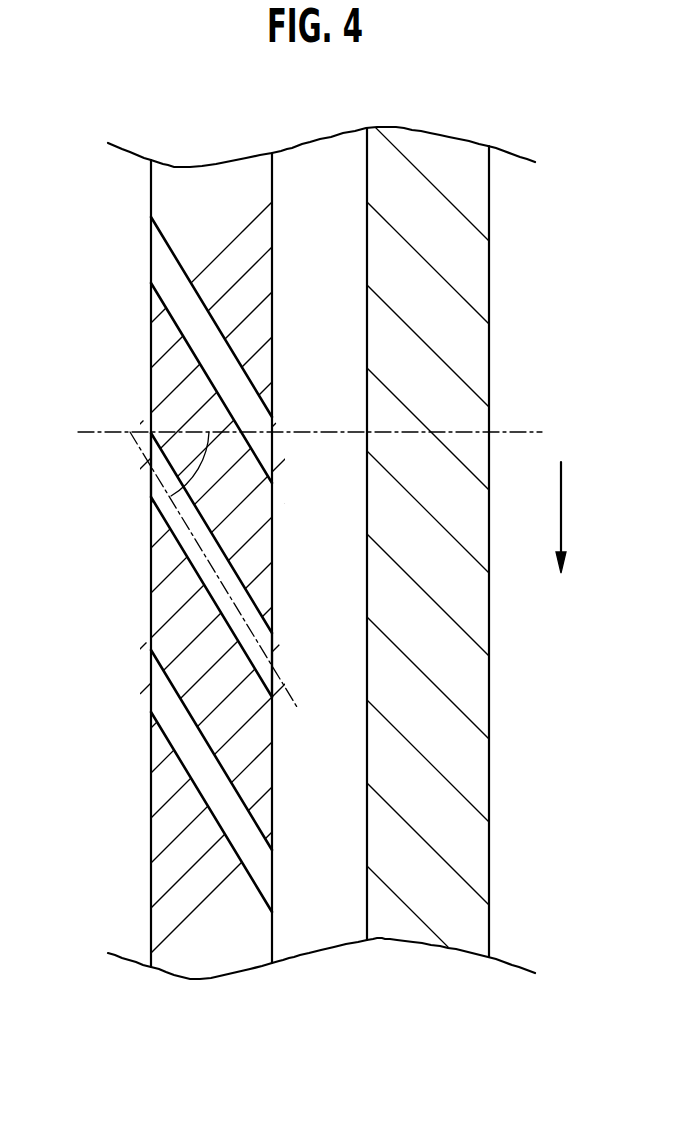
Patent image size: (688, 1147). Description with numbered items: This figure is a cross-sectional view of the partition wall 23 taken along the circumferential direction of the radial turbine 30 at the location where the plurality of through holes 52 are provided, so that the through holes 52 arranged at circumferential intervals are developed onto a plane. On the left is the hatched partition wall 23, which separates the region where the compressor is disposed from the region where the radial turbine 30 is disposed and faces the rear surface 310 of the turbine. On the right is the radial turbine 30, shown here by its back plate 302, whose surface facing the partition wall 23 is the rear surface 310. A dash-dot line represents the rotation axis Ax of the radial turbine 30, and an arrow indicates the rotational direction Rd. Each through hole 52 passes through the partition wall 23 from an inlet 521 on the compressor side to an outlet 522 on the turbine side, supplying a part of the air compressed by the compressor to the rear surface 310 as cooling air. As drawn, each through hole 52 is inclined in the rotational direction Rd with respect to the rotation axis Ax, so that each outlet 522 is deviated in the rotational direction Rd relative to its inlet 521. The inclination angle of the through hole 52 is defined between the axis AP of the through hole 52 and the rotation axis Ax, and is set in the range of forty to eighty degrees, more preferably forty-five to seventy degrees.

The partition wall 23 is at (205, 217).
The radial turbine 30 is at (440, 594).
The back plate 302 is at (458, 348).
The rear surface 310 is at (363, 258).
The through hole 52 is at (180, 313).
The inlet 521 is at (150, 477).
The outlet 522 is at (272, 653).
The rotation axis Ax is at (295, 430).
The axis of the through hole AP is at (223, 582).
The rotational direction Rd is at (574, 517).